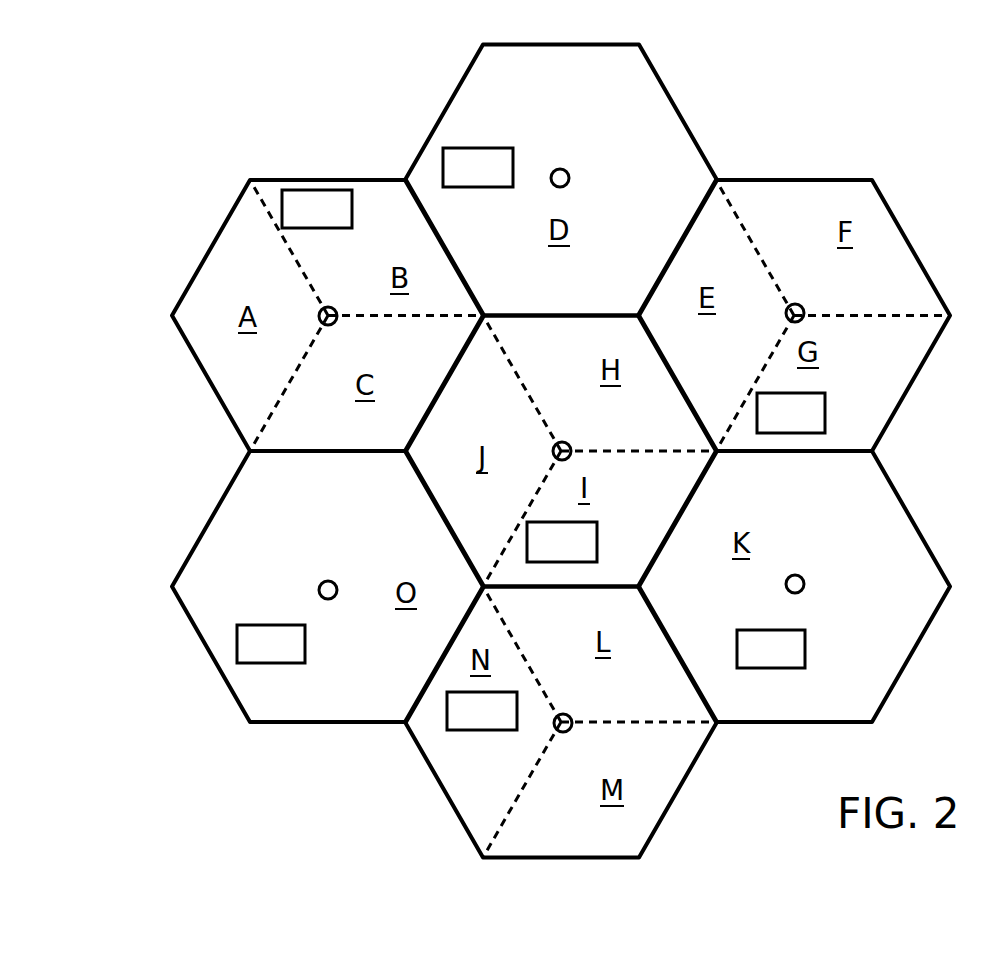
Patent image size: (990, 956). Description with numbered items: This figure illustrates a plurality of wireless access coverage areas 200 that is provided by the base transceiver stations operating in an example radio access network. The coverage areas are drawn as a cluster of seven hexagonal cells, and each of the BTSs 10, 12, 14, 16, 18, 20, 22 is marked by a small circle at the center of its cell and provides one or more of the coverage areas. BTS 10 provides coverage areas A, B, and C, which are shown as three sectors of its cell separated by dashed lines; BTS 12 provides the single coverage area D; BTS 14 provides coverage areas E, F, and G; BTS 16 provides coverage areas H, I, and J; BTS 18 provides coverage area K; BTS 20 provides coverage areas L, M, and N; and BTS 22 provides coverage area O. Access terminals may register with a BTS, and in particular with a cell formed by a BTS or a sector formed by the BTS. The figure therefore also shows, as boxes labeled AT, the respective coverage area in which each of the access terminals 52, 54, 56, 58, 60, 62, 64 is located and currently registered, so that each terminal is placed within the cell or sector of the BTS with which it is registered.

The plurality of wireless access coverage areas 200 is at (200, 143).
The BTS 10 is at (336, 308).
The BTS 12 is at (568, 170).
The BTS 14 is at (803, 305).
The BTS 16 is at (570, 443).
The BTS 18 is at (803, 576).
The BTS 20 is at (571, 715).
The BTS 22 is at (335, 582).
The access terminal 52 is at (352, 210).
The access terminal 54 is at (478, 187).
The access terminal 56 is at (825, 413).
The access terminal 58 is at (597, 542).
The access terminal 60 is at (805, 649).
The access terminal 62 is at (482, 730).
The access terminal 64 is at (305, 643).